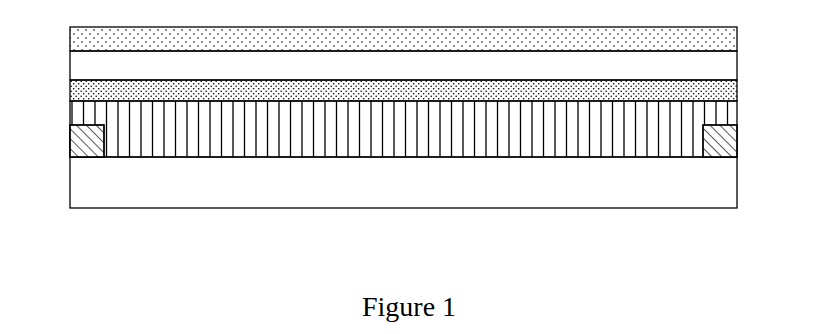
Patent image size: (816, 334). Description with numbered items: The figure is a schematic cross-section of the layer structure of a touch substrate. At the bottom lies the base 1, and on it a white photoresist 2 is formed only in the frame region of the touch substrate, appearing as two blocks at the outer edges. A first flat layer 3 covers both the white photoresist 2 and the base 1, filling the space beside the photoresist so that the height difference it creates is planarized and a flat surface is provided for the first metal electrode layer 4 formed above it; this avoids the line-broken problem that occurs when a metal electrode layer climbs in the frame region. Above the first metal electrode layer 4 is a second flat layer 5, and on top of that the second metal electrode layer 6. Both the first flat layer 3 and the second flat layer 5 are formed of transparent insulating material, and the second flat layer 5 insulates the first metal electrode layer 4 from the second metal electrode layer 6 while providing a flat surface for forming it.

The base 1 is at (708, 186).
The white photoresist 2 is at (715, 145).
The first flat layer 3 is at (715, 110).
The first metal electrode layer 4 is at (725, 89).
The second flat layer 5 is at (92, 71).
The second metal electrode layer 6 is at (703, 42).